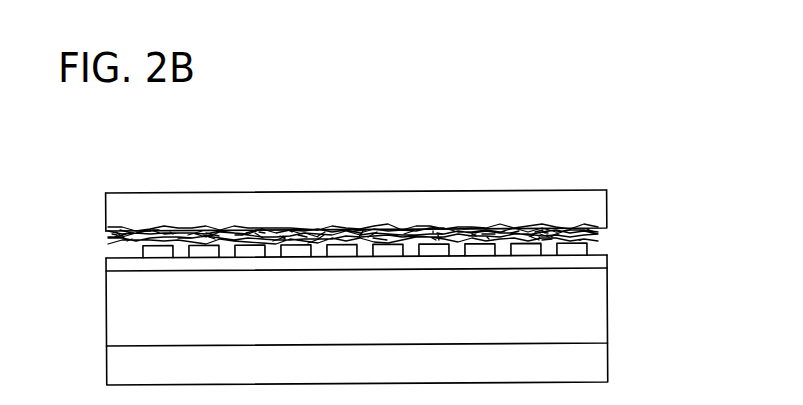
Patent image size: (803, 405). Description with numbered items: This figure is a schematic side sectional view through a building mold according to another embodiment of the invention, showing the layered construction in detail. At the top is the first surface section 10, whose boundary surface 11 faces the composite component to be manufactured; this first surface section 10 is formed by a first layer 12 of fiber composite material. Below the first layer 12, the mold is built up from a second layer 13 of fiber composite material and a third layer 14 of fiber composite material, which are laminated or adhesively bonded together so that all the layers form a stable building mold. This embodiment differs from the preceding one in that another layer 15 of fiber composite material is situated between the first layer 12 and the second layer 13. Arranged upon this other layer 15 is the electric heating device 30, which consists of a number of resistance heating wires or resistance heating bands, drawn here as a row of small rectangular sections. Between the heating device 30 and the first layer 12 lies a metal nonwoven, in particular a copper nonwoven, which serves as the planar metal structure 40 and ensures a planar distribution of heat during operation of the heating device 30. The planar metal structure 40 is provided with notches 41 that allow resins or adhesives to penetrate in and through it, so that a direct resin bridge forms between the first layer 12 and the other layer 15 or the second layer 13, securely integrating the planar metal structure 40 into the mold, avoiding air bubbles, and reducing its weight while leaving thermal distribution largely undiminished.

The first surface section 10 is at (363, 195).
The boundary surface 11 is at (233, 197).
The first layer 12 is at (131, 212).
The second layer 13 is at (510, 317).
The third layer 14 is at (588, 363).
The other layer 15 is at (118, 265).
The heating device 30 is at (581, 248).
The planar metal structure 40 is at (597, 232).
The notches 41 is at (511, 240).